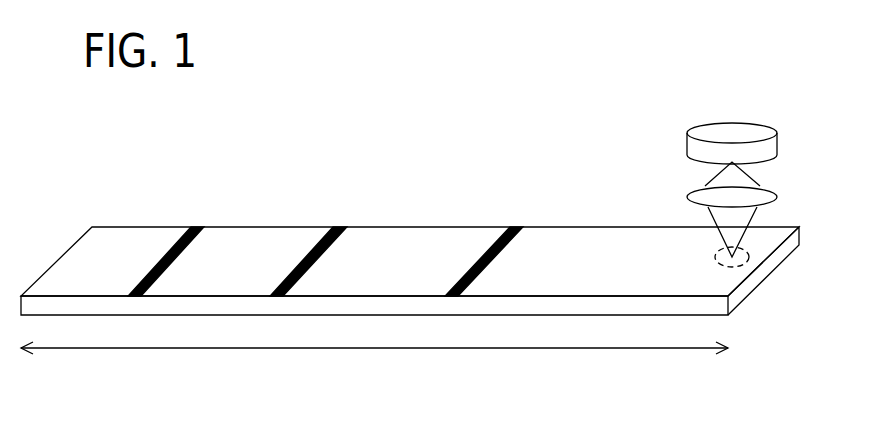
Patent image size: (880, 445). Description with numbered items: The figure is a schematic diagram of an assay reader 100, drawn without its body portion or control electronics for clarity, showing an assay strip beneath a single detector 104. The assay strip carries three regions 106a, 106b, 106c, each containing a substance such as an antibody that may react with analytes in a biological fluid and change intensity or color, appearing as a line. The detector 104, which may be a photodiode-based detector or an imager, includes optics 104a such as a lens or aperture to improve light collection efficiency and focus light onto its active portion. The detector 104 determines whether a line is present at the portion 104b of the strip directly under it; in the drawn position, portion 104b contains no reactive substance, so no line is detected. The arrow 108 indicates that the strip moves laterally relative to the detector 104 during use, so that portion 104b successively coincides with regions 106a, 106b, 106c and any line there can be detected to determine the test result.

The assay reader 100 is at (698, 45).
The detector 104 is at (708, 127).
The optics 104a is at (700, 190).
The portion of the assay strip 104b is at (717, 252).
The region 106a is at (198, 226).
The region 106b is at (337, 226).
The region 106c is at (515, 226).
The arrow 108 is at (420, 350).